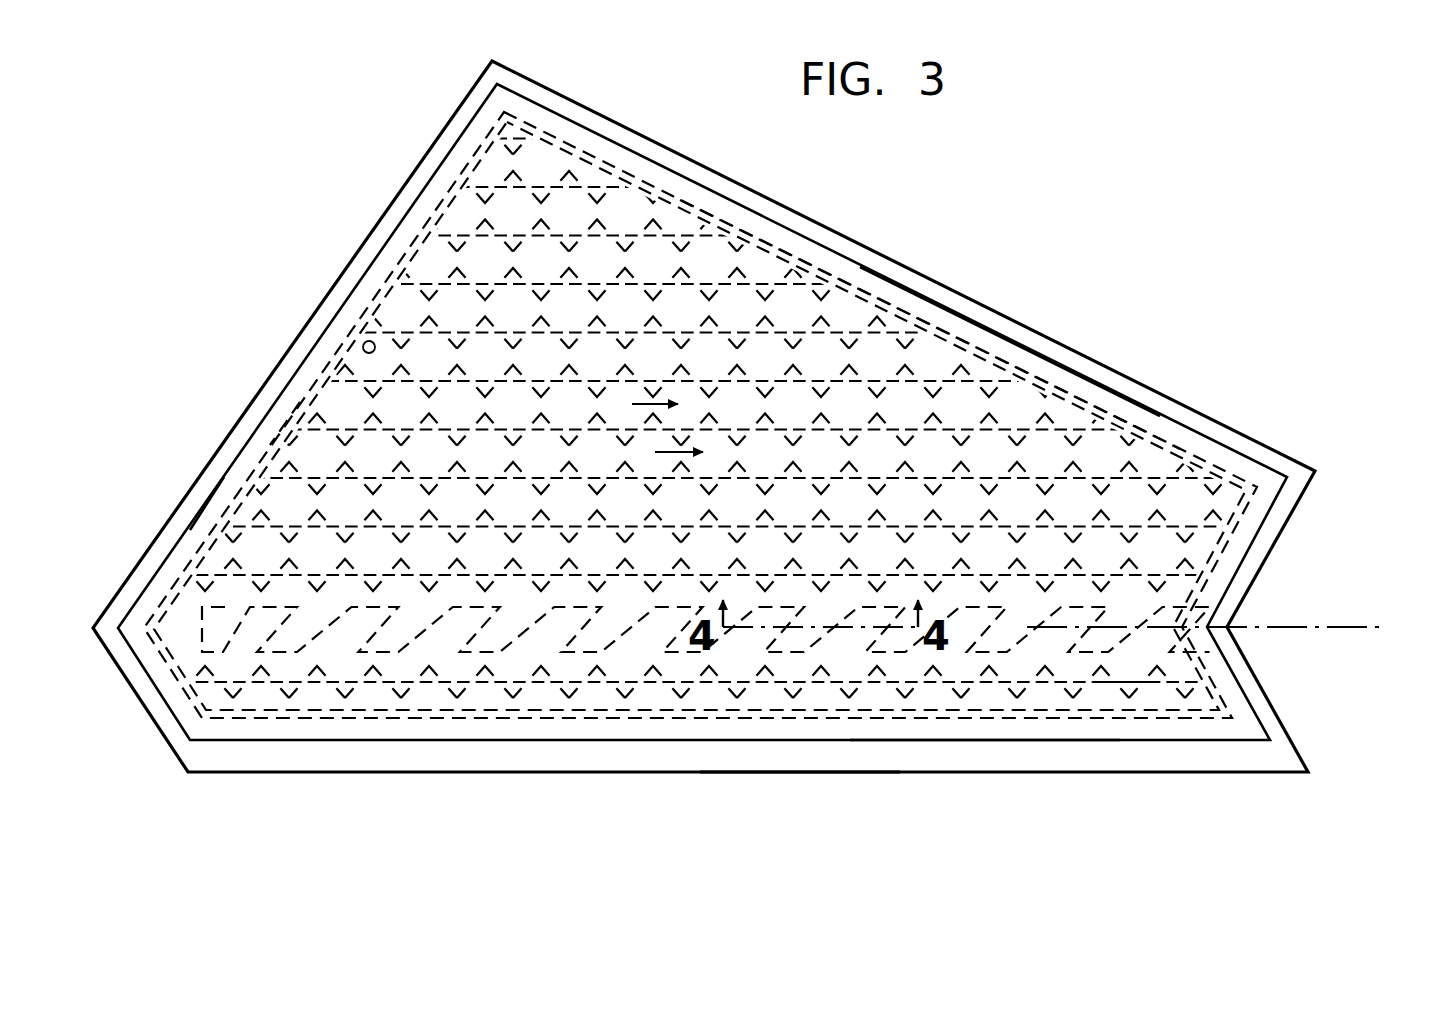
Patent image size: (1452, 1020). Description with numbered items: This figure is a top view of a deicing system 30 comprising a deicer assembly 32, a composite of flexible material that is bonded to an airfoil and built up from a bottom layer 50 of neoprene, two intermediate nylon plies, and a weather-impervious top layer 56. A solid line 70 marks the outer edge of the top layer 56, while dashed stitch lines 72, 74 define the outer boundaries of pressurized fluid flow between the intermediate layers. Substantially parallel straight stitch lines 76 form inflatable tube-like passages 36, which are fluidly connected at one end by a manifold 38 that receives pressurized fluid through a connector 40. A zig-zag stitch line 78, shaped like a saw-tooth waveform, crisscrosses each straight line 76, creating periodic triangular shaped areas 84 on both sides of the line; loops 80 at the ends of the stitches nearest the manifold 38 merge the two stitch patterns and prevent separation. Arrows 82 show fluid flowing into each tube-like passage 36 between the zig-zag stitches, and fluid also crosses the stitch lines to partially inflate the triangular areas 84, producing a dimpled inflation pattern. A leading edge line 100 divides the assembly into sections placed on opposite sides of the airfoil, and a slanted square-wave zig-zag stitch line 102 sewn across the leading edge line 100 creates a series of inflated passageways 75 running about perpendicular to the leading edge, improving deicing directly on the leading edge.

The deicing system 30 is at (968, 208).
The deicer assembly 32 is at (408, 165).
The tube-like passages 36 is at (962, 317).
The manifold 38 is at (303, 402).
The connector 40 is at (362, 341).
The bottom layer 50 is at (790, 758).
The top layer 56 is at (915, 742).
The solid line 70 is at (1045, 742).
The dashed stitch line 72 is at (546, 714).
The dashed stitch line 74 is at (610, 716).
The inflated passageways 75 is at (338, 634).
The straight stitch lines 76 is at (849, 312).
The zig-zag stitch lines 78 is at (708, 196).
The loops 80 is at (221, 478).
The arrows 82 is at (657, 402).
The triangular shaped areas 84 is at (788, 398).
The leading edge line 100 is at (1352, 626).
The zig-zag stitch line 102 is at (1124, 690).